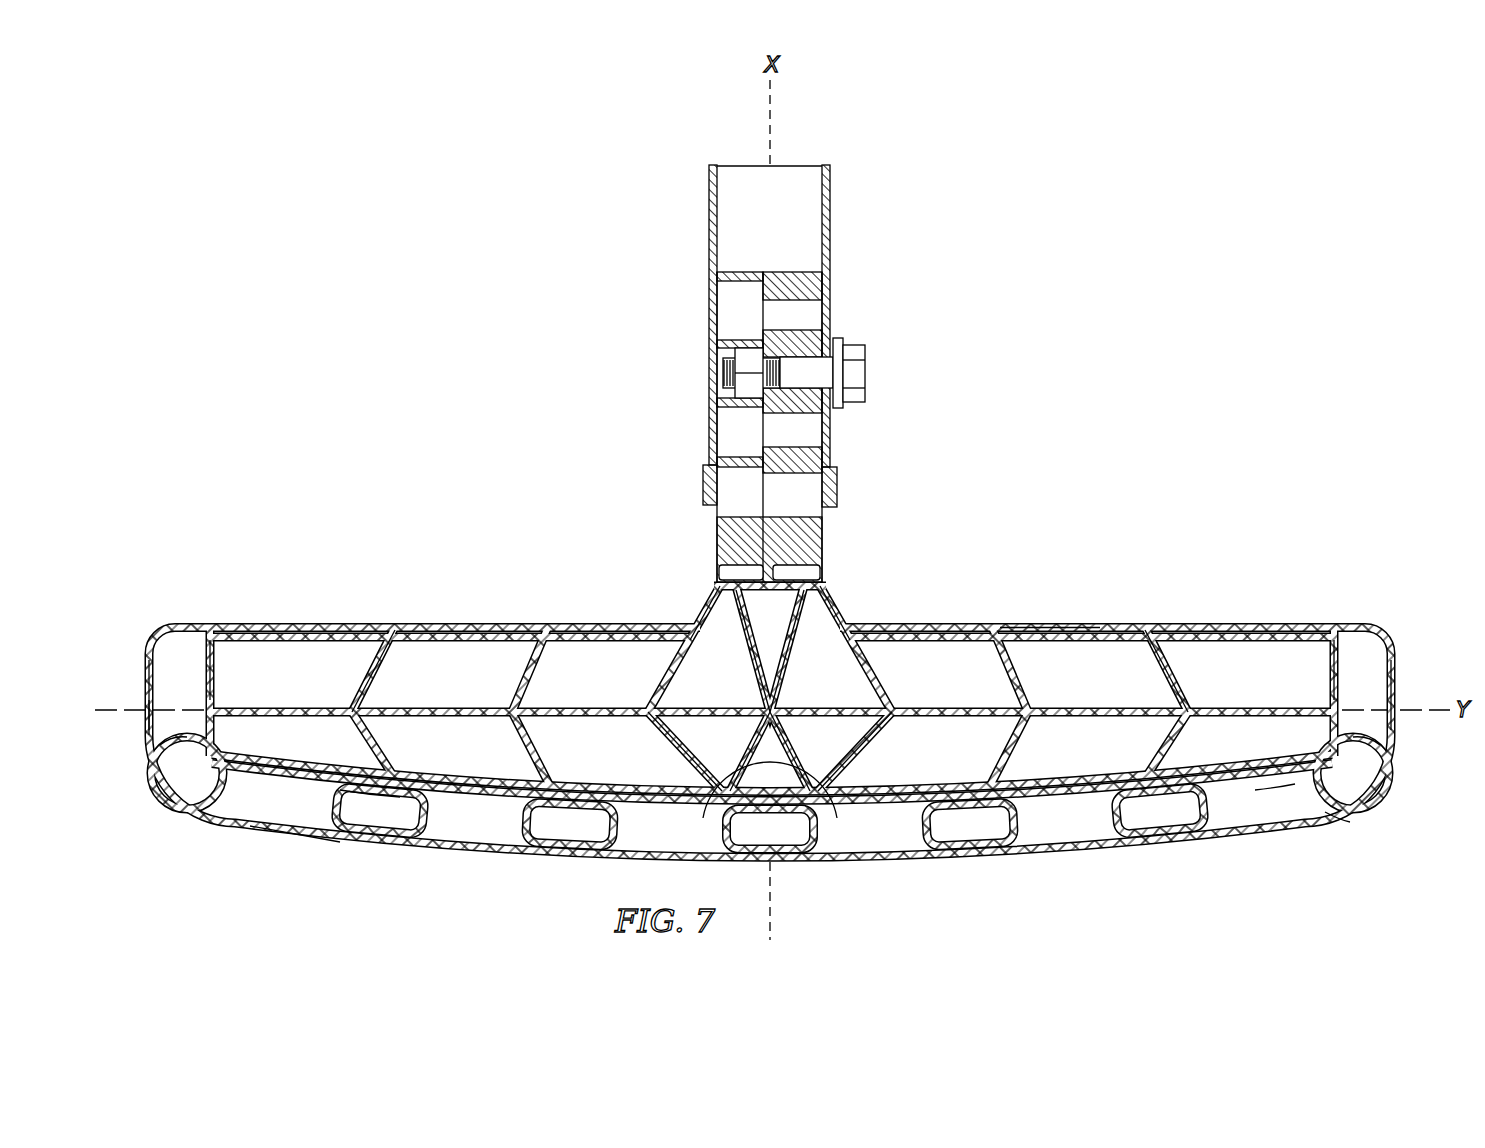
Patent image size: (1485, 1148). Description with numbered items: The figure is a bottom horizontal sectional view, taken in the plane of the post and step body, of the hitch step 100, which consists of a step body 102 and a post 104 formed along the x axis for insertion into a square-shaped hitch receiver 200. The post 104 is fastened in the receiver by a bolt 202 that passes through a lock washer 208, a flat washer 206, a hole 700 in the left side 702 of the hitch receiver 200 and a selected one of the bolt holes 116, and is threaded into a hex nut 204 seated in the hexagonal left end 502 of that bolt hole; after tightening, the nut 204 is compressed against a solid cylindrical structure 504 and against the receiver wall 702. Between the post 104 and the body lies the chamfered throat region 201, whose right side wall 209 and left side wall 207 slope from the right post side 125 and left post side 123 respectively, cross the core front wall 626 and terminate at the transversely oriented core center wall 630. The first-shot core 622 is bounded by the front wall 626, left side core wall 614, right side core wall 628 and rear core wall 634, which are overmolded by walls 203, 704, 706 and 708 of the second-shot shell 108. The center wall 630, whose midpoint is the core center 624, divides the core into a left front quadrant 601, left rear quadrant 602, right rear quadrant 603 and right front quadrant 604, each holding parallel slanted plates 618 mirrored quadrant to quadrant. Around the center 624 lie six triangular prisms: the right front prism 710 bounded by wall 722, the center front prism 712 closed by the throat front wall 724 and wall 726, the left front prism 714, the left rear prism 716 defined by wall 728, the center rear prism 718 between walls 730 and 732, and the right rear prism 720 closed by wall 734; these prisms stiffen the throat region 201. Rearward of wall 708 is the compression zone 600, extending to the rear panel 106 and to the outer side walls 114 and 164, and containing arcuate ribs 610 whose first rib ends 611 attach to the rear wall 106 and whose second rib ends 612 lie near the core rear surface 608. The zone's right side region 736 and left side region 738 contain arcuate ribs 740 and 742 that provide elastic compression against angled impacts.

The hitch step 100 is at (1082, 313).
The step body 102 is at (218, 853).
The post 104 is at (716, 530).
The rear panel 106 is at (306, 834).
The shell 108 is at (372, 843).
The side wall 114 is at (144, 680).
The bolt holes 116 is at (808, 441).
The left post side 123 is at (827, 528).
The right post side 125 is at (708, 444).
The side wall 164 is at (1396, 678).
The hitch receiver 200 is at (709, 222).
The throat region 201 is at (840, 576).
The bolt 202 is at (864, 398).
The front wall 203 is at (398, 623).
The nut 204 is at (748, 355).
The flat washer 206 is at (836, 345).
The left side wall 207 is at (830, 597).
The lock washer 208 is at (848, 352).
The right side wall 209 is at (722, 598).
The left end of bolt hole 502 is at (722, 372).
The solid cylindrical structure 504 is at (792, 338).
The compression zone 600 is at (1088, 824).
The left front quadrant 601 is at (1241, 684).
The left rear quadrant 602 is at (1066, 756).
The right rear quadrant 603 is at (431, 756).
The right front quadrant 604 is at (244, 690).
The core rear surface 608 is at (480, 792).
The ribs 610 is at (834, 855).
The first rib end 611 is at (1280, 806).
The second rib end 612 is at (1342, 822).
The left side core wall 614 is at (1316, 650).
The slanted plates 618 is at (365, 690).
The core 622 is at (492, 706).
The core center 624 is at (762, 702).
The core front wall 626 is at (1088, 623).
The right side core wall 628 is at (224, 645).
The core center wall 630 is at (590, 702).
The rear core wall 634 is at (962, 782).
The hole 700 is at (833, 308).
The left side of hitch receiver 702 is at (853, 378).
The shell wall 704 is at (1340, 640).
The shell wall 706 is at (207, 655).
The shell wall 708 is at (986, 822).
The right front prism 710 is at (694, 667).
The center front prism 712 is at (749, 625).
The left front prism 714 is at (796, 667).
The left rear prism 716 is at (803, 747).
The center rear prism 718 is at (749, 783).
The right rear prism 720 is at (696, 747).
The wall 722 is at (708, 620).
The front wall of throat region 724 is at (754, 578).
The wall 726 is at (832, 620).
The wall 728 is at (870, 762).
The wall 730 is at (837, 805).
The wall 732 is at (703, 805).
The wall 734 is at (675, 762).
The right side region 736 is at (188, 790).
The left side region 738 is at (1345, 794).
The arcuate rib 740 is at (172, 748).
The arcuate rib 742 is at (1368, 748).